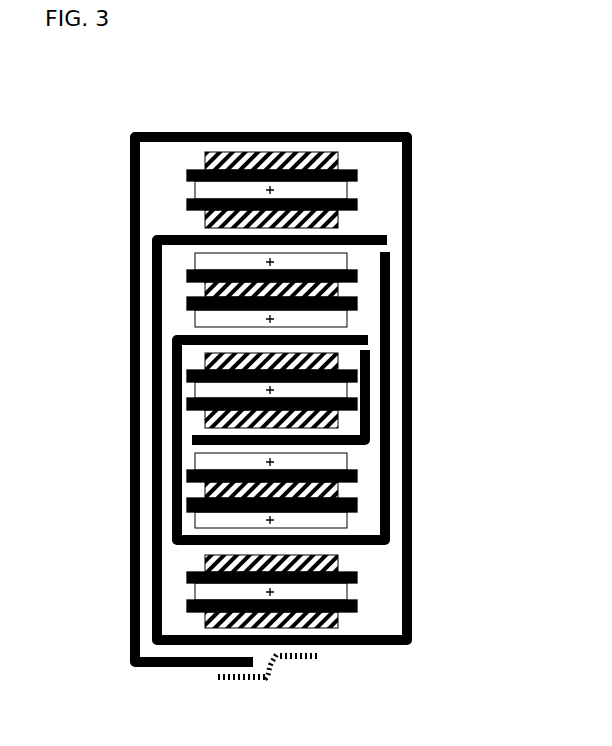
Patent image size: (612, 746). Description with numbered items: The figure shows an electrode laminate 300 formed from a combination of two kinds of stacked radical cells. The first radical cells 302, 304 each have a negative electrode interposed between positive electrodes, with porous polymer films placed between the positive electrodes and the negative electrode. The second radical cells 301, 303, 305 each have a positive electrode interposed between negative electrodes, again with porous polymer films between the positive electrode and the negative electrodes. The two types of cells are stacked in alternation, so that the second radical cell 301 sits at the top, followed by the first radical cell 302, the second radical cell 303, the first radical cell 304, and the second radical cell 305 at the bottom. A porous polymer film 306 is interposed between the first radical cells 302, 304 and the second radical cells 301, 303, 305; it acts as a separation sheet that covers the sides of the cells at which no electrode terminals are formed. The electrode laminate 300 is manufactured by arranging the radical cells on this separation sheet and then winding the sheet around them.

The electrode laminate 300 is at (100, 127).
The second radical cell 301 is at (338, 153).
The first radical cell 302 is at (347, 258).
The second radical cell 303 is at (338, 357).
The first radical cell 304 is at (347, 457).
The second radical cell 305 is at (338, 560).
The porous polymer film 306 is at (412, 602).